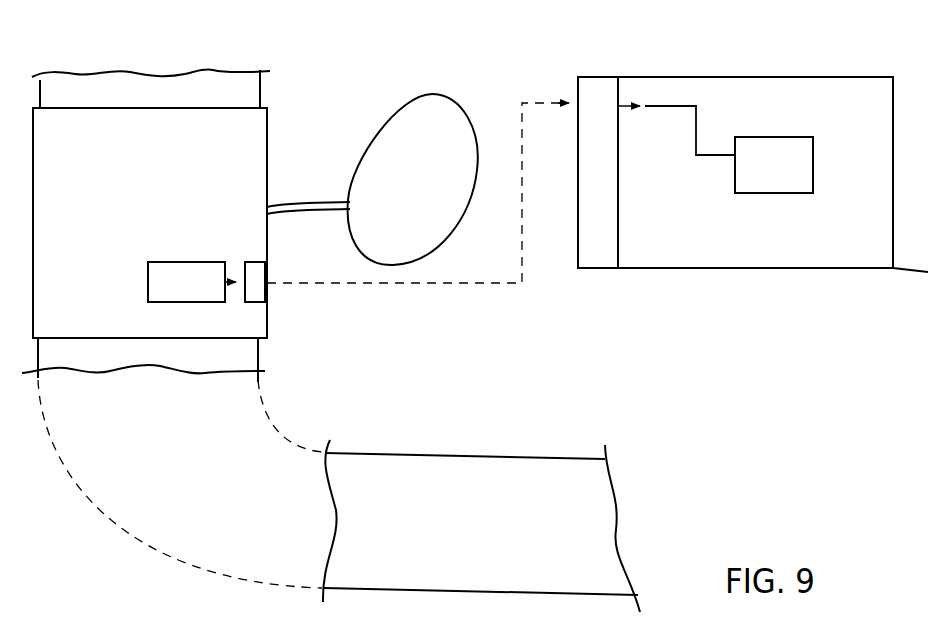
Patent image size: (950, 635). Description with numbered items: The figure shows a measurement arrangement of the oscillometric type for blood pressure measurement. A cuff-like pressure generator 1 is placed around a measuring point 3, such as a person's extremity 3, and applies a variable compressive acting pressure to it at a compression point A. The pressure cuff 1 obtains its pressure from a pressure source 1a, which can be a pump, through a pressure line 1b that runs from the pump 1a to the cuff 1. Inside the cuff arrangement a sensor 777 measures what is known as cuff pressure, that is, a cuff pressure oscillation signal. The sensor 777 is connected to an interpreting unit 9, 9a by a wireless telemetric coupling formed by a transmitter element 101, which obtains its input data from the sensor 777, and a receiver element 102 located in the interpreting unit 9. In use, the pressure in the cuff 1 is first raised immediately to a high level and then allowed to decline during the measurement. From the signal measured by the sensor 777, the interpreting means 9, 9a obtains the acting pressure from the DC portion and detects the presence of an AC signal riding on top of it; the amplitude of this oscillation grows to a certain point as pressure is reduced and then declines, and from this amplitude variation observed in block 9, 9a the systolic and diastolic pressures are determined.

The cuff-like pressure generator 1 is at (268, 155).
The pressure source 1a is at (447, 220).
The pressure line 1b is at (310, 213).
The measuring point 3 is at (205, 72).
The interpreting unit 9 is at (783, 88).
The interpreting means 9a is at (775, 186).
The transmitter element 101 is at (252, 270).
The receiver element 102 is at (588, 90).
The sensor 777 is at (187, 272).
The compression point A is at (268, 93).